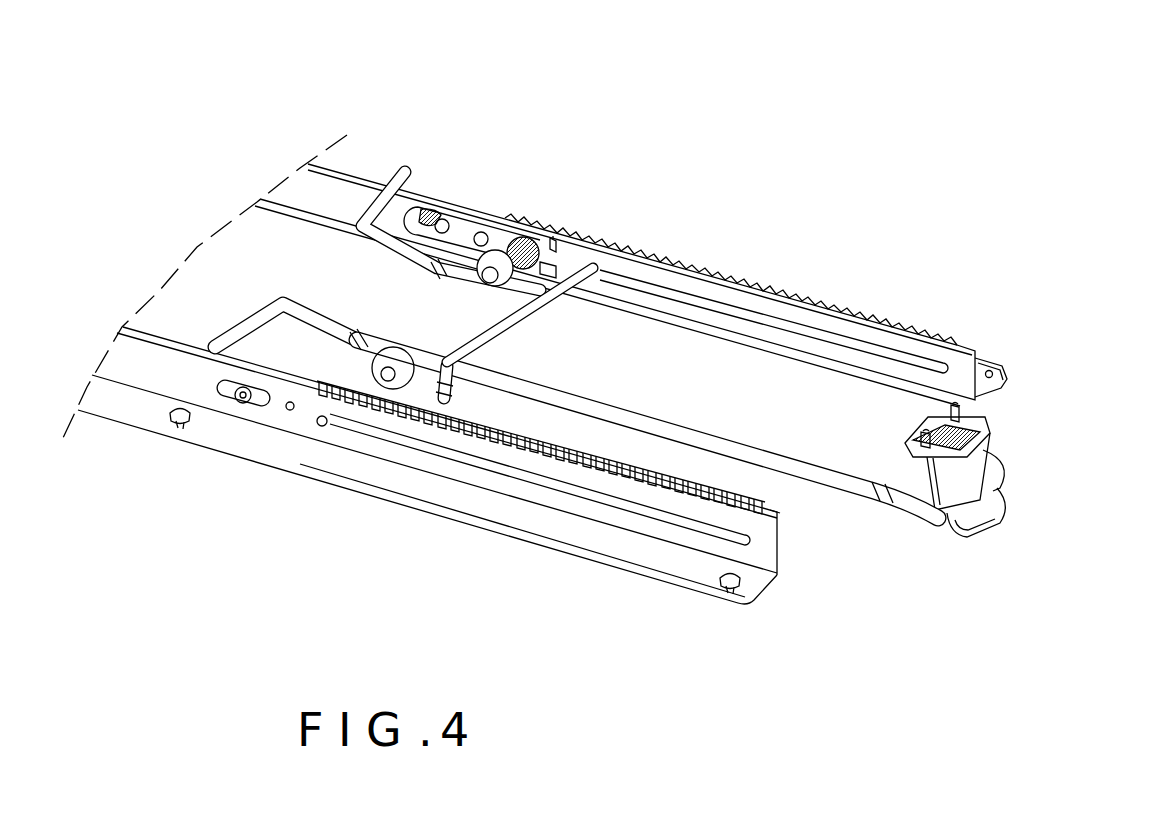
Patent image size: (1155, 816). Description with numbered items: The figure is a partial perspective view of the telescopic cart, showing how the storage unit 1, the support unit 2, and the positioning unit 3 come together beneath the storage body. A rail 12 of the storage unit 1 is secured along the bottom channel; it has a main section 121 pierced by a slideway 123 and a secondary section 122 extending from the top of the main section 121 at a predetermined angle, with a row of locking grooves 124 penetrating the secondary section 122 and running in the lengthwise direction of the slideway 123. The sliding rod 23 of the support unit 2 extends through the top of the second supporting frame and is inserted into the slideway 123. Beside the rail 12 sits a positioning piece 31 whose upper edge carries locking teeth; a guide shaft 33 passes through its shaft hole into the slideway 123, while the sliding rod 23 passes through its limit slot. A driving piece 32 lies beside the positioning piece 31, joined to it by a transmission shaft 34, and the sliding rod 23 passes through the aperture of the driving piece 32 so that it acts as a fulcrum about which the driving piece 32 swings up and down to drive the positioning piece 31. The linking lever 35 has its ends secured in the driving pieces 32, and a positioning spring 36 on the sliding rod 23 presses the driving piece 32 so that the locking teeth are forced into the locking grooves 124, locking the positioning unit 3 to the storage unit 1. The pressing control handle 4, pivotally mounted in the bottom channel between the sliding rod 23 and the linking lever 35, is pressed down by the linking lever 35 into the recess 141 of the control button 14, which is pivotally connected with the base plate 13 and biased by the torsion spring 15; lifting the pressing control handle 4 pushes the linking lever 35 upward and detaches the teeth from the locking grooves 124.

The storage unit 1 is at (1100, 300).
The rail 12 is at (557, 517).
The main section 121 is at (765, 557).
The secondary section 122 is at (782, 515).
The slideway 123 is at (662, 512).
The locking grooves 124 is at (577, 468).
The base plate 13 is at (987, 414).
The control button 14 is at (983, 450).
The recess 141 is at (1007, 472).
The torsion spring 15 is at (997, 522).
The support unit 2 is at (532, 460).
The sliding rod 23 is at (325, 425).
The positioning unit 3 is at (538, 184).
The positioning piece 31 is at (464, 210).
The driving piece 32 is at (562, 262).
The guide shaft 33 is at (443, 205).
The transmission shaft 34 is at (484, 234).
The linking lever 35 is at (622, 244).
The positioning spring 36 is at (542, 252).
The pressing control handle 4 is at (770, 370).